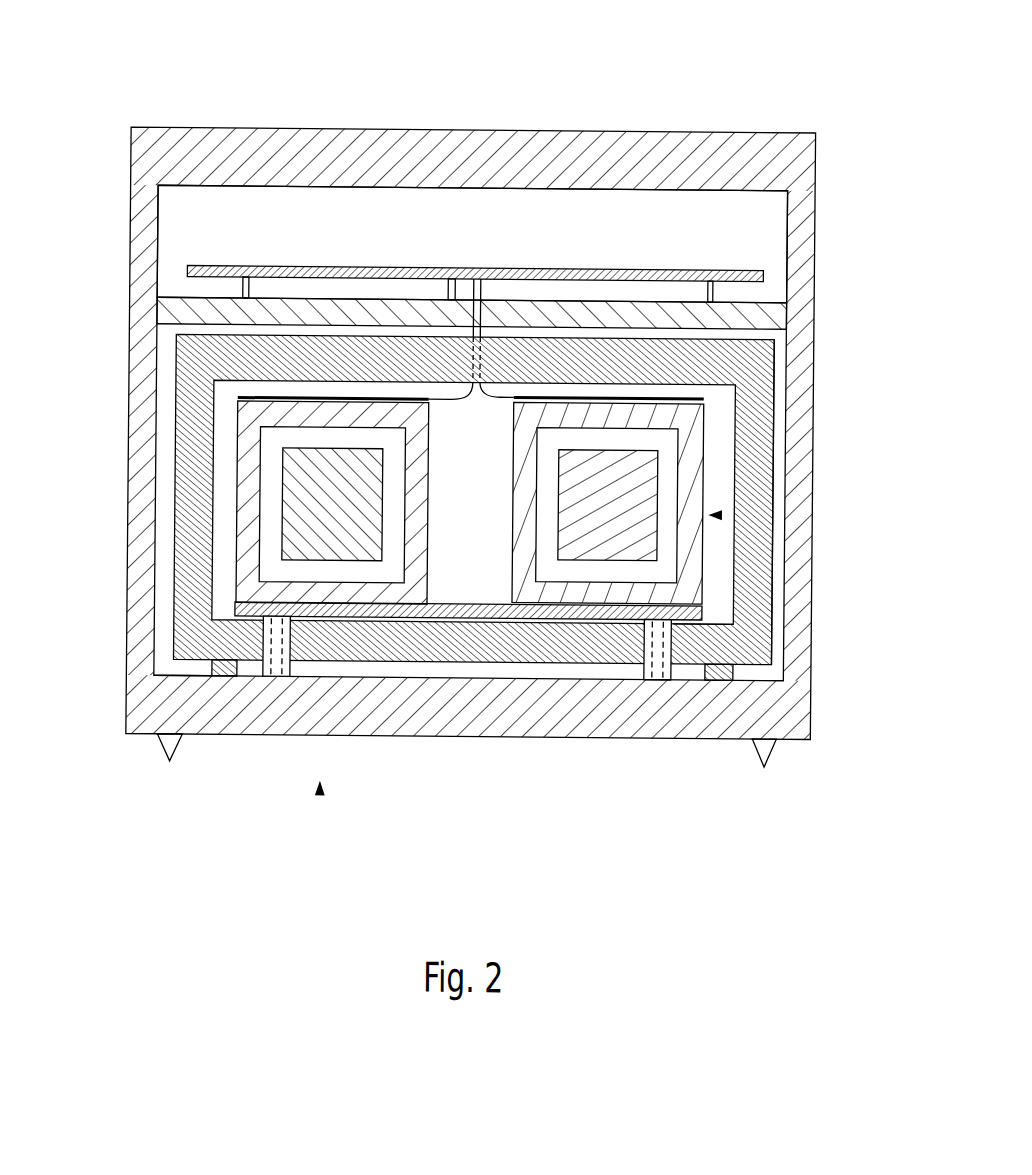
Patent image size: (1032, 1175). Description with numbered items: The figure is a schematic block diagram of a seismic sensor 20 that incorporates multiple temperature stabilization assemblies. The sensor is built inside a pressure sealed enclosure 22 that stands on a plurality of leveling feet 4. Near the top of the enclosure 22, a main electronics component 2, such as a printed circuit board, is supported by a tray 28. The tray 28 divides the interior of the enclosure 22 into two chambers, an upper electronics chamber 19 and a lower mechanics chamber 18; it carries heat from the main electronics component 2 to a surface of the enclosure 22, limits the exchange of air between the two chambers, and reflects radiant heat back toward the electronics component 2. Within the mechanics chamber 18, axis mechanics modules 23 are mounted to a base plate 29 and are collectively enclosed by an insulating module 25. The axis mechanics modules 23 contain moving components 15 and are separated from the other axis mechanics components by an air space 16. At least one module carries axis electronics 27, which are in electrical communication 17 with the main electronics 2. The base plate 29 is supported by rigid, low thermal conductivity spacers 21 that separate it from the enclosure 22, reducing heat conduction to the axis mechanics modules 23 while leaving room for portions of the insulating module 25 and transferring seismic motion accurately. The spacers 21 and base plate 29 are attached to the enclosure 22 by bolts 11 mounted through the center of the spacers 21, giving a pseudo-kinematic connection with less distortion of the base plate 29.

The main electronics component 2 is at (739, 269).
The leveling feet 4 is at (166, 751).
The bolts 11 is at (659, 673).
The moving components 15 is at (711, 513).
The air space 16 is at (671, 535).
The electrical communication 17 is at (457, 293).
The mechanics chamber 18 is at (165, 670).
The electronics chamber 19 is at (364, 209).
The seismic sensor 20 is at (323, 784).
The spacers 21 is at (664, 669).
The pressure sealed enclosure 22 is at (582, 129).
The axis mechanics modules 23 is at (653, 470).
The insulating module 25 is at (775, 444).
The axis electronics 27 is at (182, 392).
The tray 28 is at (767, 305).
The base plate 29 is at (752, 625).